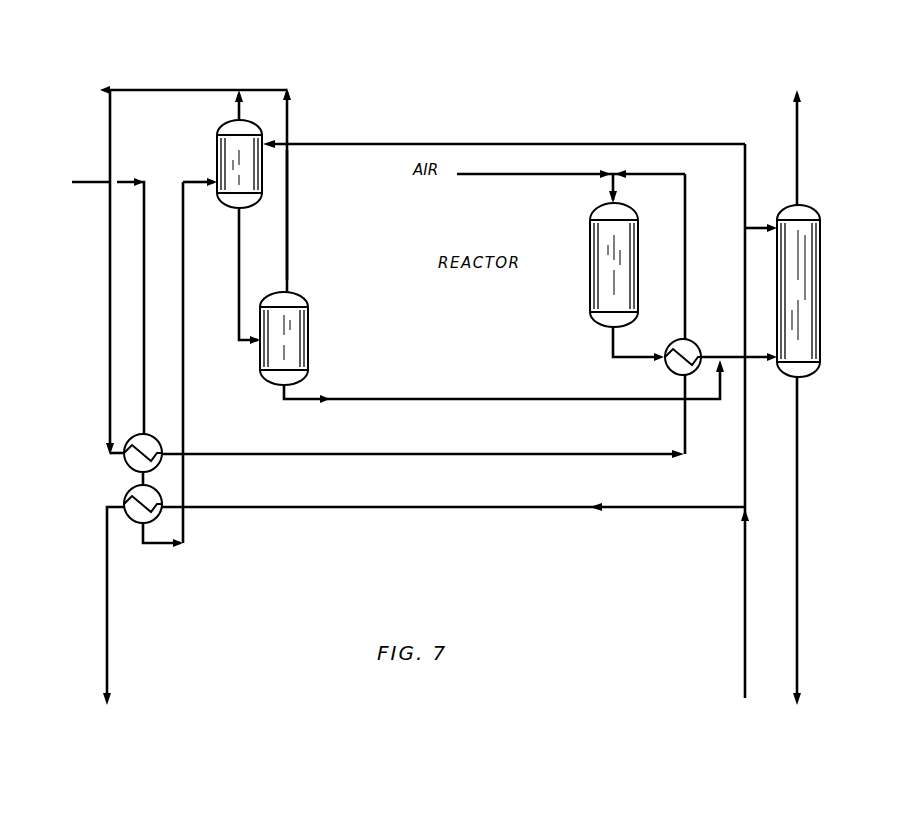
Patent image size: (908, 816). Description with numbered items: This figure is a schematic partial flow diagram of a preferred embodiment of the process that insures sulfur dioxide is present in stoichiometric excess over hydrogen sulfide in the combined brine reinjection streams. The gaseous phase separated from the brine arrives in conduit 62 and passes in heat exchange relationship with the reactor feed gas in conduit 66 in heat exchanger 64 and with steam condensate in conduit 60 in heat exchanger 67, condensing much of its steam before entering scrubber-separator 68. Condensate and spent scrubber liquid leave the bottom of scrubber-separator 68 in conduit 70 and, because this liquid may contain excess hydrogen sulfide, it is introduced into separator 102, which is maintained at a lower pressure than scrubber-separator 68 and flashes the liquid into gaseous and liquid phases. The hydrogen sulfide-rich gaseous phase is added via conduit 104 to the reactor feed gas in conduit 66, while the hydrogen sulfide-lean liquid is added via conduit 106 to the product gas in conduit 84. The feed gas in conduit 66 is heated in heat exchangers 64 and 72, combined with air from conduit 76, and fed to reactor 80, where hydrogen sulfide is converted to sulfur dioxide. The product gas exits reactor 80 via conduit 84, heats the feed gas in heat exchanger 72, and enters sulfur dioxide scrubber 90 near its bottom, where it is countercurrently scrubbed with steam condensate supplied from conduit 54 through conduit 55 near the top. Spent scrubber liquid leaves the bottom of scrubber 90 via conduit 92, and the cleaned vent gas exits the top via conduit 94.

The conduit 54 is at (398, 142).
The conduit 55 is at (752, 226).
The conduit 60 is at (425, 508).
The conduit 62 is at (95, 187).
The heat exchanger 64 is at (124, 460).
The conduit 66 is at (108, 132).
The heat exchanger 67 is at (124, 497).
The scrubber-separator 68 is at (230, 143).
The conduit 70 is at (237, 250).
The heat exchanger 72 is at (690, 340).
The conduit 76 is at (492, 177).
The reactor 80 is at (620, 213).
The conduit 84 is at (628, 360).
The sulfur dioxide scrubber 90 is at (810, 290).
The conduit 92 is at (799, 512).
The conduit 94 is at (800, 148).
The separator 102 is at (295, 325).
The conduit 104 is at (290, 205).
The conduit 106 is at (387, 398).